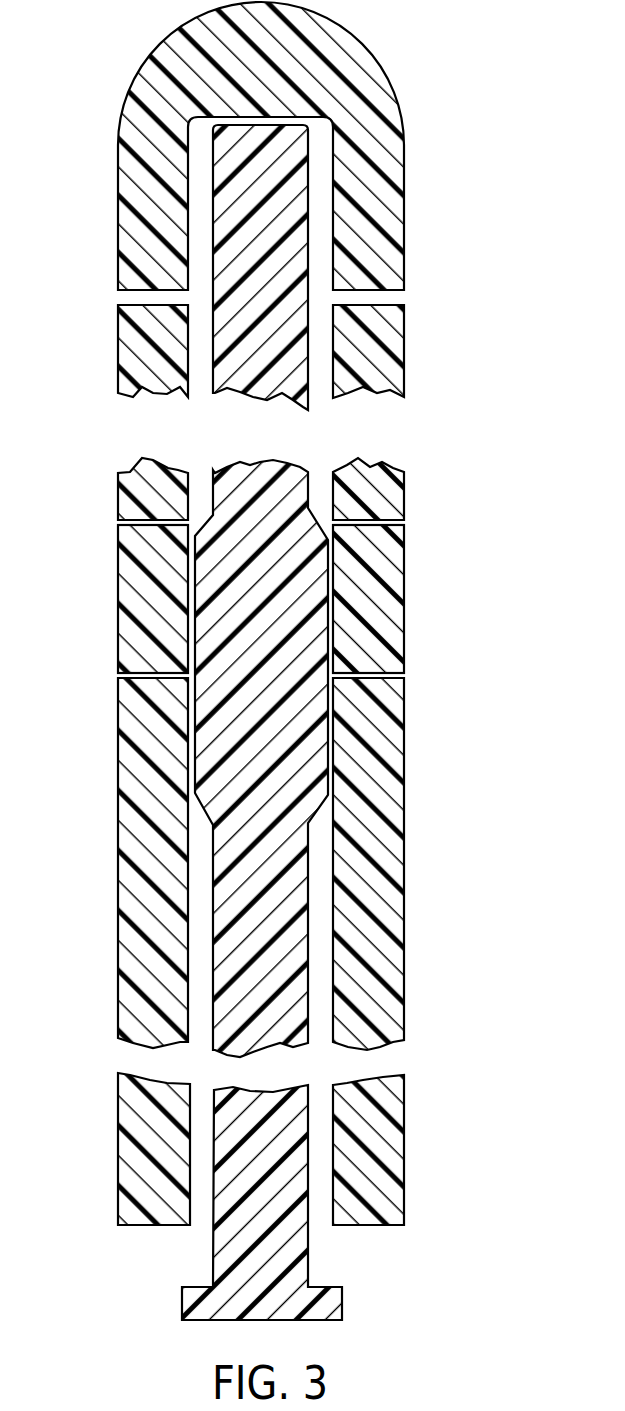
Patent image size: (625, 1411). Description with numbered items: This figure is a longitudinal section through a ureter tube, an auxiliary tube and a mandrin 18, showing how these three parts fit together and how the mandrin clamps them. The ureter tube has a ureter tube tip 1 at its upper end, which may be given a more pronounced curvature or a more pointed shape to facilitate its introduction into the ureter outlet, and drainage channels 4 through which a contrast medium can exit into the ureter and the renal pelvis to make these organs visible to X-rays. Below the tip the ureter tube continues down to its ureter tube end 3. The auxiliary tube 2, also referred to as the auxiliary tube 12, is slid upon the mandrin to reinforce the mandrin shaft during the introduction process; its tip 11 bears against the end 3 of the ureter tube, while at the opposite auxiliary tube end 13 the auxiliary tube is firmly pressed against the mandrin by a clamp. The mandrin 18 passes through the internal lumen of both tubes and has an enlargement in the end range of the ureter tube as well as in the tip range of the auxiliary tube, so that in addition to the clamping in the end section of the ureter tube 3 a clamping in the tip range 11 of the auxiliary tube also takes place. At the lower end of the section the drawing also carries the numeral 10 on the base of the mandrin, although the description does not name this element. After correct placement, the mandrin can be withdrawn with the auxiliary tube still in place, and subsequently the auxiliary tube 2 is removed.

The ureter tube tip 1 is at (277, 3).
The auxiliary tube 2 is at (120, 210).
The ureter tube end 3 is at (129, 616).
The drainage channels 4 is at (393, 294).
The base flange of core 10 is at (334, 1298).
The tip of the auxiliary tube 11 is at (365, 707).
The auxiliary tube 12 is at (397, 997).
The auxiliary tube end 13 is at (393, 1210).
The mandrin 18 is at (297, 235).